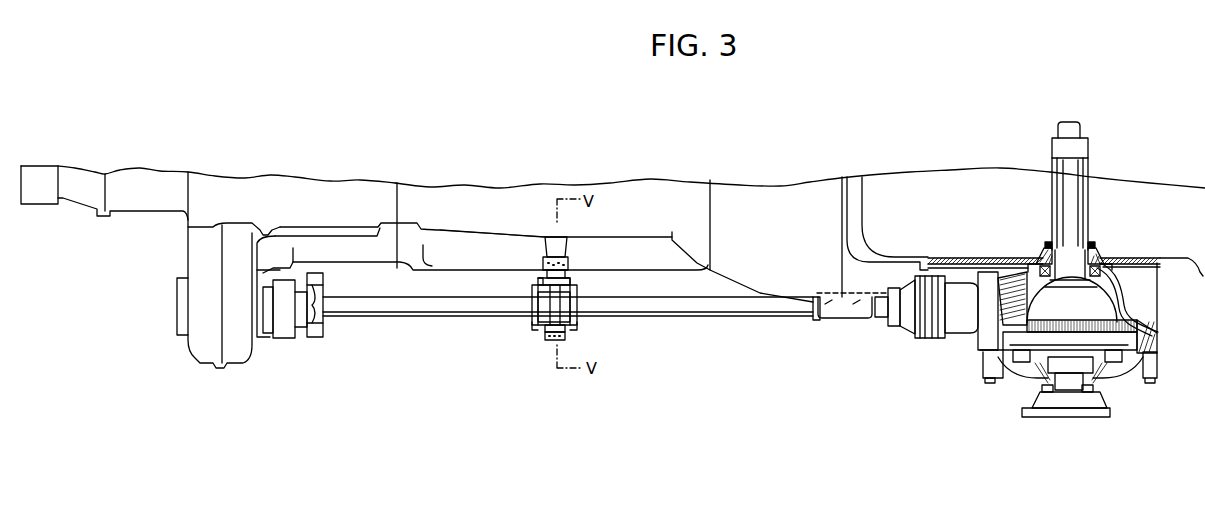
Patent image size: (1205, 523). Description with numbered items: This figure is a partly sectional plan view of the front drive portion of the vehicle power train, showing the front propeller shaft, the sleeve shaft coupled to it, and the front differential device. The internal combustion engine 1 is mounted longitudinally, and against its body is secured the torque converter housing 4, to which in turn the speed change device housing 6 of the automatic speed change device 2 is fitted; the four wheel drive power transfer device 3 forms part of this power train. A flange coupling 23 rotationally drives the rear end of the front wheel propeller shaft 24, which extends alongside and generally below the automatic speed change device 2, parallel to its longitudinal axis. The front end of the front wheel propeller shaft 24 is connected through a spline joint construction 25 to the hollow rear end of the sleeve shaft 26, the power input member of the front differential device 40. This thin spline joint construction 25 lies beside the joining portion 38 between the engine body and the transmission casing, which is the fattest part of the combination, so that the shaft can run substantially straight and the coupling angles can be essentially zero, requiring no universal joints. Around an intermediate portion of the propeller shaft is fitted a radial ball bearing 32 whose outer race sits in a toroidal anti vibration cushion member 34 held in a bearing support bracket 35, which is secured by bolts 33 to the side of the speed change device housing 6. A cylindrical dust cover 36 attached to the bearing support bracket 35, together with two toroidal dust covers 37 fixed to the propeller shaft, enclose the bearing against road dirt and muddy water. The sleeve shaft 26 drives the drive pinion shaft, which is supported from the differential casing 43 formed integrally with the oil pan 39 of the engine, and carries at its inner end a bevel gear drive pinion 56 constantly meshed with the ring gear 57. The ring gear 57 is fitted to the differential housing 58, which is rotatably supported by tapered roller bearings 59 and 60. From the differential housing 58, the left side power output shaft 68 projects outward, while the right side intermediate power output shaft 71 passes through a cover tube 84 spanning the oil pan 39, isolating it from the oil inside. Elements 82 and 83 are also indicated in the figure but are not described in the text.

The internal combustion engine 1 is at (903, 173).
The automatic speed change device 2 is at (537, 183).
The four wheel drive power transfer device 3 is at (258, 183).
The torque converter housing 4 is at (780, 192).
The speed change device housing 6 is at (508, 192).
The flange coupling 23 is at (318, 338).
The front wheel propeller shaft 24 is at (395, 313).
The spline joint construction 25 is at (807, 325).
The sleeve shaft 26 is at (857, 324).
The radial ball bearing 32 is at (578, 292).
The bolts 33 is at (568, 248).
The anti vibration cushion member 34 is at (566, 337).
The bearing support bracket 35 is at (569, 268).
The cylindrical dust cover 36 is at (578, 327).
The toroidal dust covers 37 is at (537, 283).
The joining portion 38 is at (855, 303).
The oil pan 39 is at (965, 257).
The front differential device 40 is at (1147, 307).
The differential casing 43 is at (982, 320).
The bevel gear drive pinion 56 is at (1013, 297).
The ring gear 57 is at (1157, 348).
The differential housing 58 is at (1098, 302).
The tapered roller bearing 59 is at (1098, 273).
The tapered roller bearing 60 is at (1035, 382).
The left side power output shaft 68 is at (1070, 392).
The right side intermediate power output shaft 71 is at (1072, 195).
The lower seal 82 is at (1093, 388).
The support bracket 83 is at (1092, 250).
The cover tube 84 is at (1088, 217).